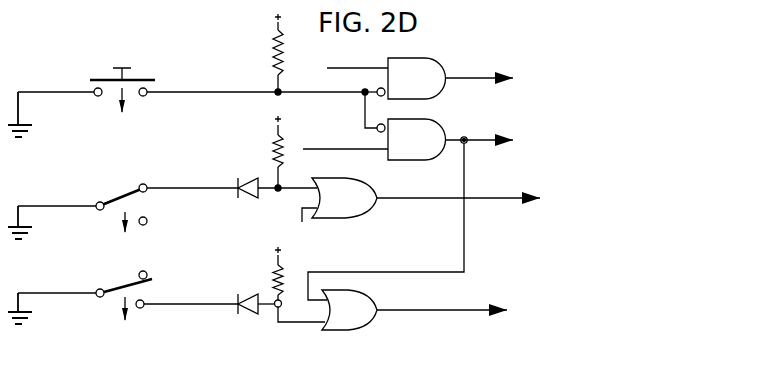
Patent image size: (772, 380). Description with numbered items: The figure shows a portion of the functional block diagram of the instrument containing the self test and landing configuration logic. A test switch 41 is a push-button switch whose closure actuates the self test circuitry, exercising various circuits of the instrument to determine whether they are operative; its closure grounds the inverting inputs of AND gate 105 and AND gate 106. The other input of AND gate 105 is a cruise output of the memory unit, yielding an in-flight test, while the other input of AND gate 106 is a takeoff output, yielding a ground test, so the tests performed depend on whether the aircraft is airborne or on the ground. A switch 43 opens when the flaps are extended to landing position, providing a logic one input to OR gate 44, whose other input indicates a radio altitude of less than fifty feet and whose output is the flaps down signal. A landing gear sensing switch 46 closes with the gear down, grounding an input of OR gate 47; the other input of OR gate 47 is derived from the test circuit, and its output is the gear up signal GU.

The test switch 41 is at (148, 72).
The switch 43 is at (120, 192).
The landing gear sensing switch 46 is at (125, 280).
The AND gate 105 is at (420, 67).
The AND gate 106 is at (430, 130).
The OR gate 44 is at (358, 195).
The OR gate 47 is at (362, 307).